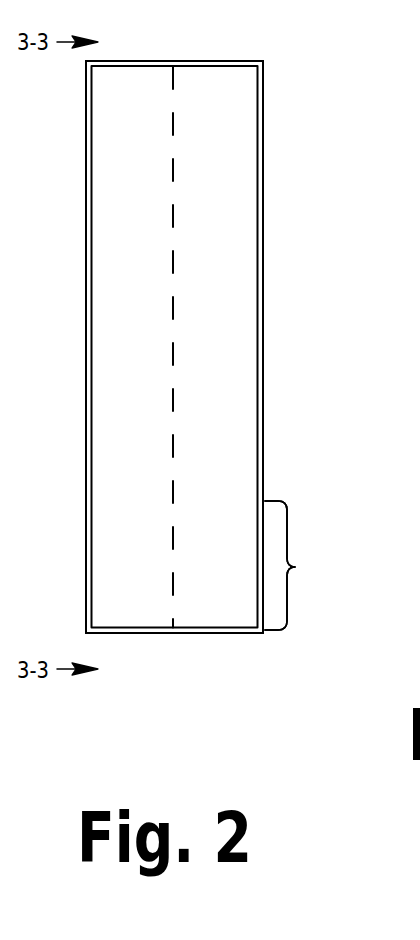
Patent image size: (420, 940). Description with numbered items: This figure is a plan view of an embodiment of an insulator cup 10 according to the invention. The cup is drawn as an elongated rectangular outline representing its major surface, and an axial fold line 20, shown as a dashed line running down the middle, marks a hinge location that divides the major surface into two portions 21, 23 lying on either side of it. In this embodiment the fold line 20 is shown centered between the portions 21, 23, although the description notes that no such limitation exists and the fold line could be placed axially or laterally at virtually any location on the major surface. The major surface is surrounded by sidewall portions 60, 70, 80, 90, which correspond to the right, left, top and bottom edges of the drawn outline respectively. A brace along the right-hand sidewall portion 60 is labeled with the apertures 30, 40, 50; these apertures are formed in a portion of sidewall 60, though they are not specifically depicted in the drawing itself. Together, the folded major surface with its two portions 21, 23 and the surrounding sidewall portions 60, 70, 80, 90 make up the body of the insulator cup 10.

The insulator cup 10 is at (261, 692).
The fold line 20 is at (180, 170).
The portion of major surface 21 is at (136, 410).
The portion of major surface 23 is at (232, 363).
The aperture 30 is at (318, 560).
The aperture 40 is at (280, 565).
The aperture 50 is at (280, 565).
The sidewall portion 60 is at (263, 318).
The sidewall portion 70 is at (86, 318).
The sidewall portion 80 is at (211, 61).
The sidewall portion 90 is at (179, 634).